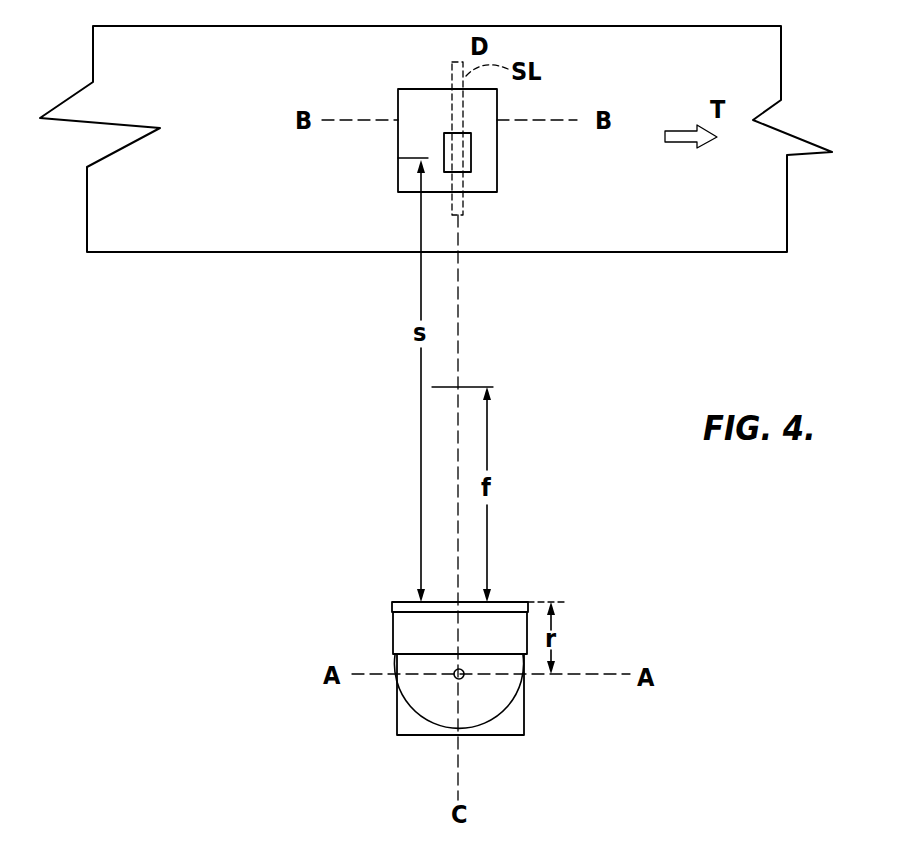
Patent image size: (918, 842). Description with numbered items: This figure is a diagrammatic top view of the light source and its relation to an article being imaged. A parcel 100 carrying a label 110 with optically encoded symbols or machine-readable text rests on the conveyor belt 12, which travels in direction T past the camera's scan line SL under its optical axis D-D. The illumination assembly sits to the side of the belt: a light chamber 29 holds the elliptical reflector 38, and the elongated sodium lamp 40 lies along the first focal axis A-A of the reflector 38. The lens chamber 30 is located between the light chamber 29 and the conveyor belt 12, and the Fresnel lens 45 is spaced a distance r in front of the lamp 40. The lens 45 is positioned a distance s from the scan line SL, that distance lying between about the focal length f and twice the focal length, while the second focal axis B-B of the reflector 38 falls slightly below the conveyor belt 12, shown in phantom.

The conveyor belt 12 is at (750, 188).
The parcel 100 is at (497, 182).
The label 110 is at (471, 156).
The Fresnel lens 45 is at (498, 600).
The lens chamber 30 is at (393, 630).
The light chamber 29 is at (524, 711).
The elliptical reflector 38 is at (407, 690).
The sodium lamp 40 is at (454, 677).